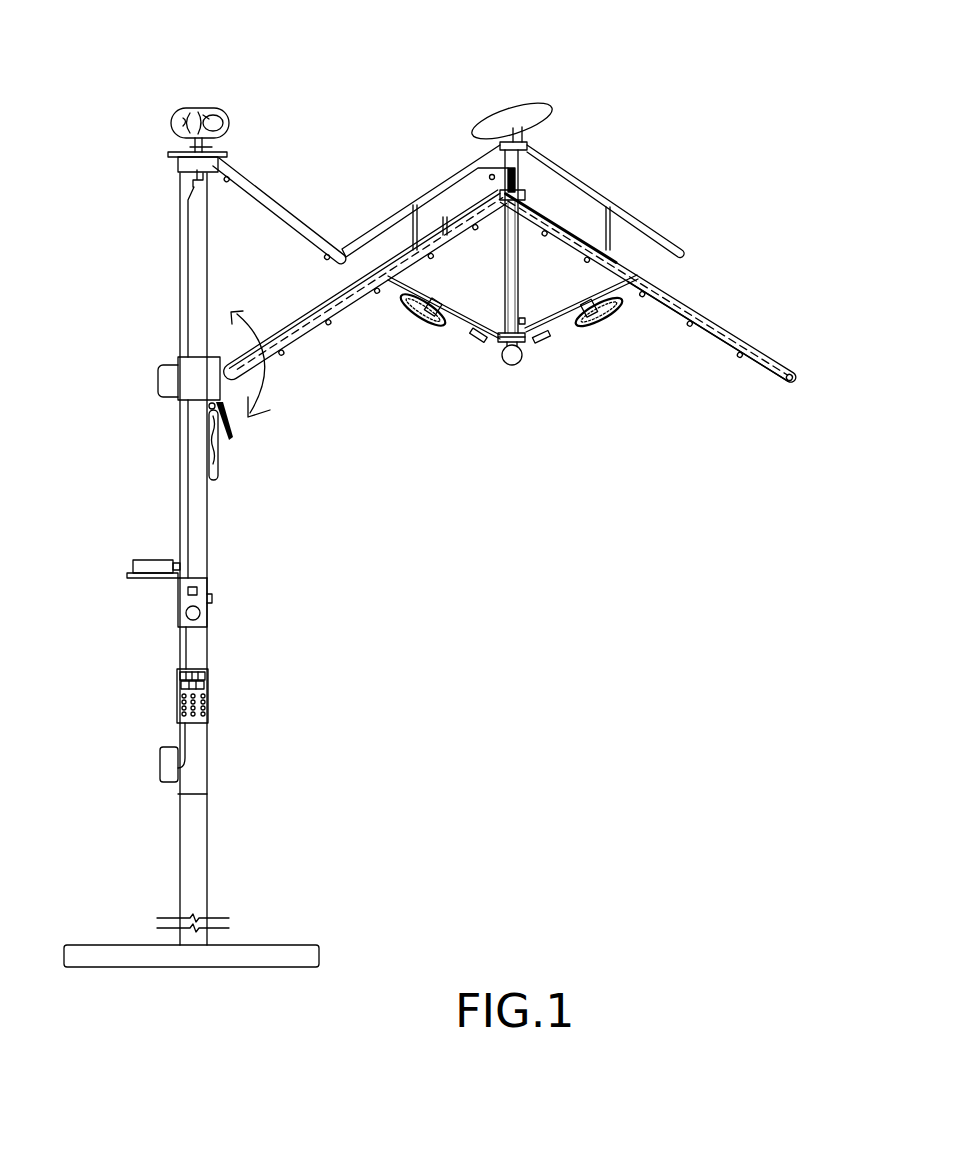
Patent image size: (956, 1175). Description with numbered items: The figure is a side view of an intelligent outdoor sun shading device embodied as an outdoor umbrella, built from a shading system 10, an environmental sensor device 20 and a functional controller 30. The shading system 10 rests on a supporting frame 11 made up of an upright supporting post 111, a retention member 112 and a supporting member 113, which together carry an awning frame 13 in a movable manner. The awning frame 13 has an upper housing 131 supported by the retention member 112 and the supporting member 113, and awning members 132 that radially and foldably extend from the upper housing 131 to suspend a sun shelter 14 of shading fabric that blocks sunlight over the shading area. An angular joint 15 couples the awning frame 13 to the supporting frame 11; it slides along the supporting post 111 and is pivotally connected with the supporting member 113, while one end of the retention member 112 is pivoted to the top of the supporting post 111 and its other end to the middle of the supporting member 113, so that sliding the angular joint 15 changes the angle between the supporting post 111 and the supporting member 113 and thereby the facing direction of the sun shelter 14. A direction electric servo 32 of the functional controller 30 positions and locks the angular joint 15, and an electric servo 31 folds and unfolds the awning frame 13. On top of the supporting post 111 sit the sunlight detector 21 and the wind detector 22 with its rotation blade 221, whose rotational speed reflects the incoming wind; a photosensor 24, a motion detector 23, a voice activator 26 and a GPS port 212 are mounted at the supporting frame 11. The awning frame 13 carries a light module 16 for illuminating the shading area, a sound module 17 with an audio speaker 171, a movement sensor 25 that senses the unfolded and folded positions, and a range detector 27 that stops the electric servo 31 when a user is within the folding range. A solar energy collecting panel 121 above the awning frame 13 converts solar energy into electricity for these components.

The shading system 10 is at (678, 280).
The supporting frame 11 is at (170, 612).
The supporting post 111 is at (197, 510).
The retention member 112 is at (273, 217).
The supporting member 113 is at (307, 303).
The solar energy collecting panel 121 is at (508, 125).
The awning frame 13 is at (495, 357).
The upper housing 131 is at (515, 192).
The awning member 132 is at (763, 367).
The sun shelter 14 is at (735, 333).
The angular joint 15 is at (205, 387).
The light module 16 is at (710, 358).
The sound module 17 is at (613, 330).
The audio speaker 171 is at (418, 315).
The environmental sensor device 20 is at (204, 115).
The sunlight detector 21 is at (223, 153).
The wind detector 22 is at (163, 116).
The rotation blade 221 is at (184, 110).
The motion detector 23 is at (473, 335).
The photosensor 24 is at (197, 140).
The movement sensor 25 is at (523, 322).
The voice activator 26 is at (215, 599).
The range detector 27 is at (800, 383).
The functional controller 30 is at (223, 643).
The electric servo 31 is at (167, 757).
The direction electric servo 32 is at (167, 373).
The GPS port 212 is at (172, 553).